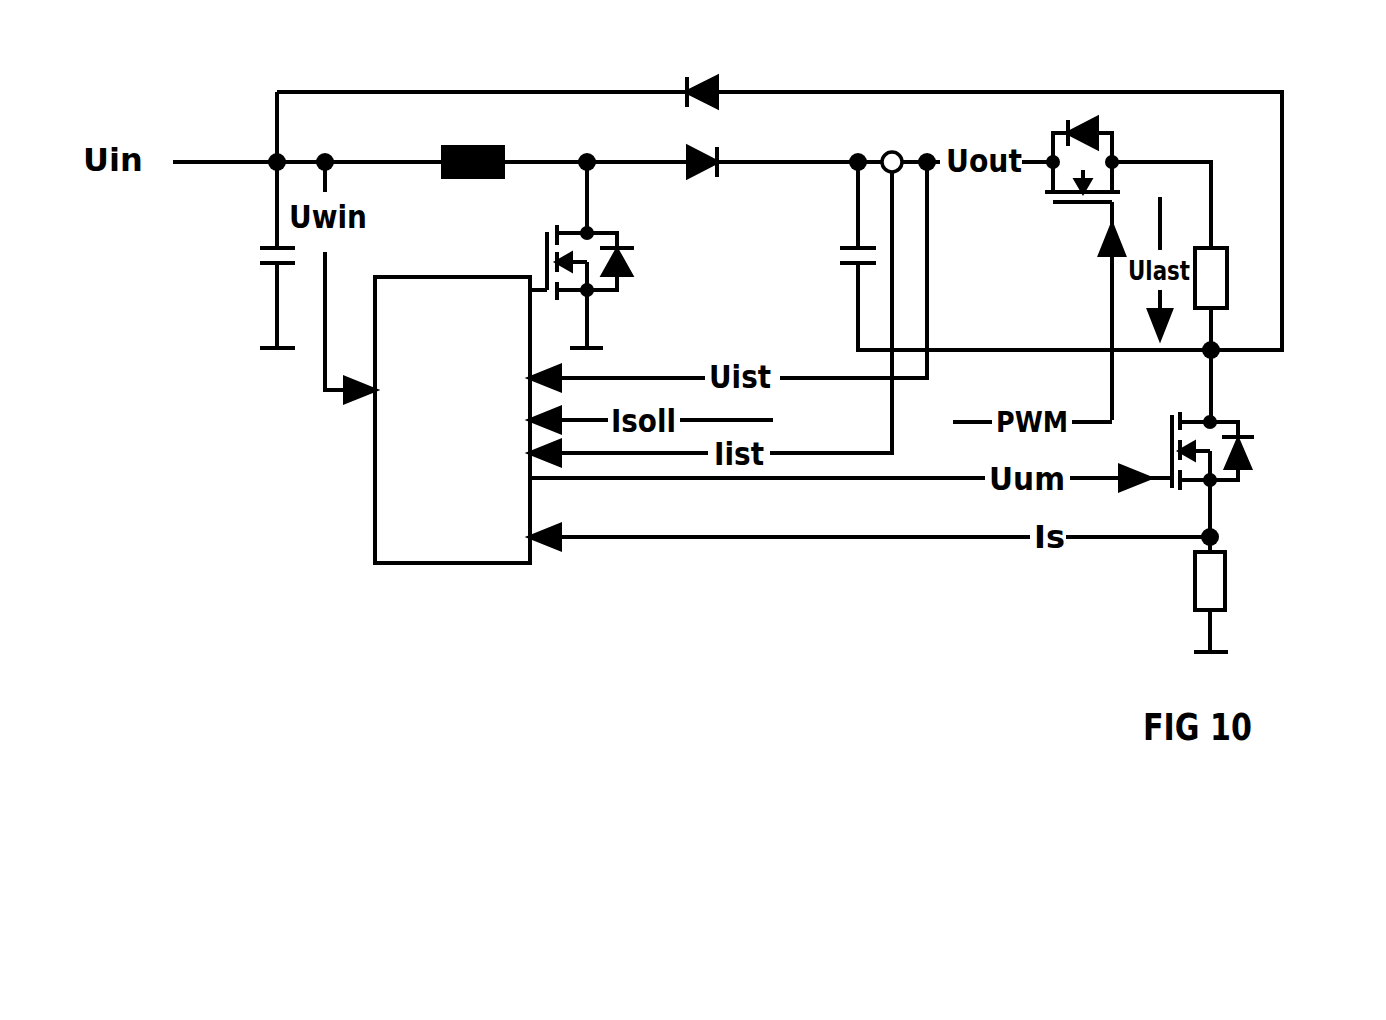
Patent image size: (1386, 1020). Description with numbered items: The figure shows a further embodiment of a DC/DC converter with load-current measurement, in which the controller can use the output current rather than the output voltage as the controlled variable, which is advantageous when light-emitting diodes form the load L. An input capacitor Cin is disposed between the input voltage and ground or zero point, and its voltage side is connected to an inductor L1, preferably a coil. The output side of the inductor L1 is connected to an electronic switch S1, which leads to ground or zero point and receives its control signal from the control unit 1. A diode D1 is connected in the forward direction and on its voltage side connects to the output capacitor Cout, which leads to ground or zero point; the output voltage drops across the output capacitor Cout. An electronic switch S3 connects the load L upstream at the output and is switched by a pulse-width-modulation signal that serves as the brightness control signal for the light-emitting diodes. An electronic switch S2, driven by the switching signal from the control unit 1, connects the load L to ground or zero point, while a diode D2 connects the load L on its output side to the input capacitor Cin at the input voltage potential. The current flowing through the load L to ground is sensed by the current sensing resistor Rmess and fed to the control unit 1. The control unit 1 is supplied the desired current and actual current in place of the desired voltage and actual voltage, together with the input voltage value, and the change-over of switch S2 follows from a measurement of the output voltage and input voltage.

The control unit 1 is at (435, 496).
The inductor L1 is at (473, 139).
The diode D1 is at (710, 183).
The diode D2 is at (706, 69).
The input capacitor Cin is at (237, 293).
The output capacitor Cout is at (821, 264).
The electronic switch S1 is at (612, 262).
The electronic switch S2 is at (1229, 436).
The electronic switch S3 is at (1106, 158).
The load L is at (1224, 278).
The current sensing resistor Rmess is at (1266, 602).